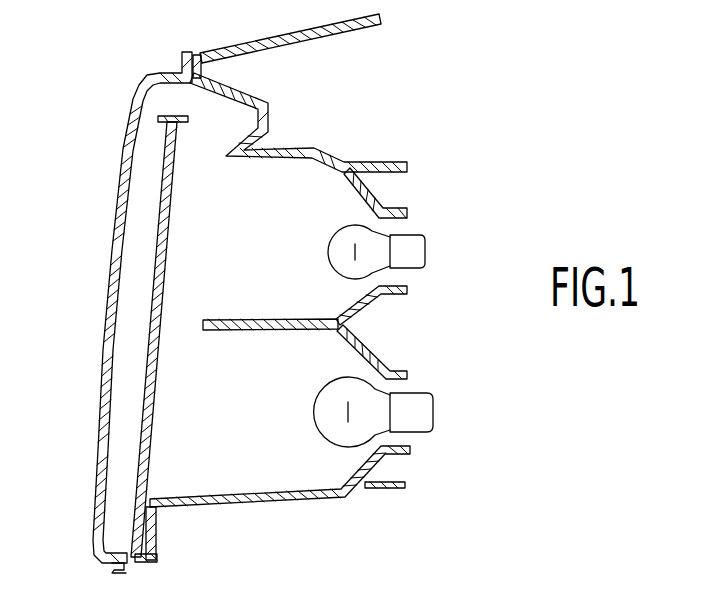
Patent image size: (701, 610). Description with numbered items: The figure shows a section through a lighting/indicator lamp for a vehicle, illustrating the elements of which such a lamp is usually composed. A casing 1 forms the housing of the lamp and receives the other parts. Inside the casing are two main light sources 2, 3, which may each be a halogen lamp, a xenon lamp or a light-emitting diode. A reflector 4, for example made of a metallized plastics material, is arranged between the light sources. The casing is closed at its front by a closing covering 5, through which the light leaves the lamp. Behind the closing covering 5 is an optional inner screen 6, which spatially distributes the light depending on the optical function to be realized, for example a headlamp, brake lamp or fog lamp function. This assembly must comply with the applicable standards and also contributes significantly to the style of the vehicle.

The casing 1 is at (128, 68).
The main light source 2 is at (407, 243).
The main light source 3 is at (433, 397).
The reflector 4 is at (365, 337).
The closing covering 5 is at (98, 443).
The inner screen 6 is at (148, 430).